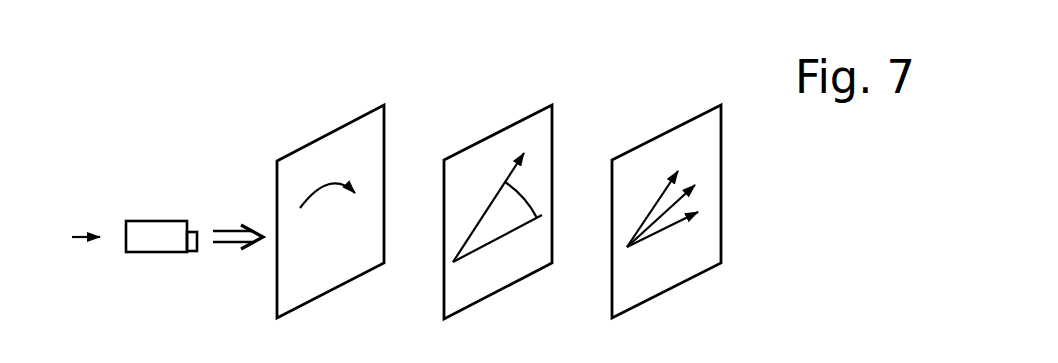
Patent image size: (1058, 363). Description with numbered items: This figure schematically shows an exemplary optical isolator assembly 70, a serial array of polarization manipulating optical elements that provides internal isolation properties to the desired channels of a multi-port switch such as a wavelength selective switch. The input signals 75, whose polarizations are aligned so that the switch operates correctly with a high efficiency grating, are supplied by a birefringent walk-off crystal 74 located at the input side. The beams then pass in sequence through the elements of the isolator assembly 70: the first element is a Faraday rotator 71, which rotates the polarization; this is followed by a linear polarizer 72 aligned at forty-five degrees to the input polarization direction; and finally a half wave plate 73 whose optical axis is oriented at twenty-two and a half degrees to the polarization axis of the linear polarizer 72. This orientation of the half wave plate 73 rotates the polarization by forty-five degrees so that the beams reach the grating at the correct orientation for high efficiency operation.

The optical isolator assembly 70 is at (718, 88).
The Faraday rotator 71 is at (338, 290).
The linear polarizer 72 is at (500, 290).
The half wave plate 73 is at (672, 287).
The birefringent walk-off crystal 74 is at (151, 253).
The input signals 75 is at (238, 244).